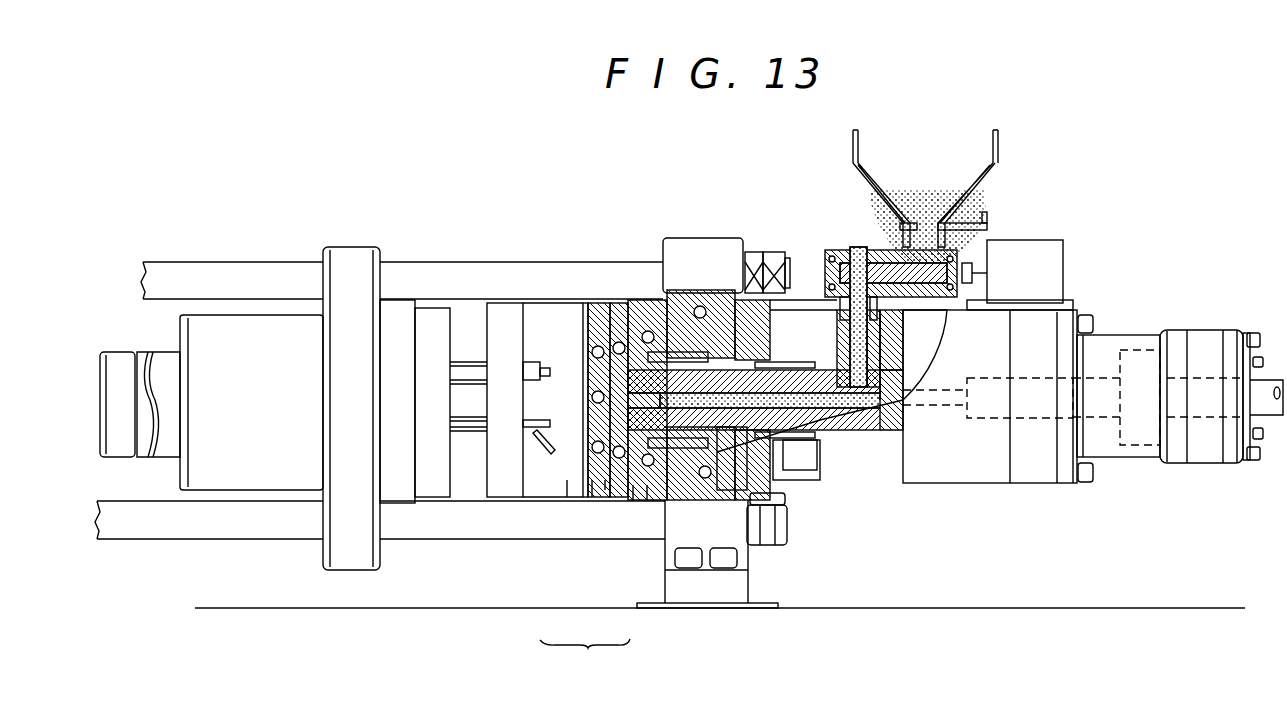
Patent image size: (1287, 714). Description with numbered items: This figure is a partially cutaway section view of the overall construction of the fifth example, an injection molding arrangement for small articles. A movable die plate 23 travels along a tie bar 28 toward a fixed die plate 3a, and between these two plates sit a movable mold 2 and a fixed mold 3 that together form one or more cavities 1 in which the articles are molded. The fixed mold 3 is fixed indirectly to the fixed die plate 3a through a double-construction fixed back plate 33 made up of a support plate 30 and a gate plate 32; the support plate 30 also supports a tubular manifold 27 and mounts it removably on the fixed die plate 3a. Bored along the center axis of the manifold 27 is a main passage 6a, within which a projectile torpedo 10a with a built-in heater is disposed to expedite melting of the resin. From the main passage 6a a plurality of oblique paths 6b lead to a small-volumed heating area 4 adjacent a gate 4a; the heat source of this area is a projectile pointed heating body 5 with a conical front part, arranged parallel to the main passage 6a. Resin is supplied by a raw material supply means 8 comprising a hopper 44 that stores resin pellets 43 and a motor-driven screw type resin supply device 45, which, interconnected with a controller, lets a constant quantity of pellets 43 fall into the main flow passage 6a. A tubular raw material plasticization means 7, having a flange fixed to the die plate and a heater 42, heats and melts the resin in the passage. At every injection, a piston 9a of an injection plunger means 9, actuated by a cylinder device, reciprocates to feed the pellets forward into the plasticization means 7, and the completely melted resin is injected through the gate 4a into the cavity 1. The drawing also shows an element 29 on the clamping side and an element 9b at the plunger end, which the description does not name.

The cavity 1 is at (592, 497).
The movable mold 2 is at (512, 396).
The fixed mold 3 is at (590, 330).
The fixed die plate 3a is at (702, 252).
The heating area 4 is at (592, 382).
The gate 4a is at (567, 497).
The pointed heating body 5 is at (605, 490).
The main passage 6a is at (818, 427).
The oblique paths 6b is at (663, 330).
The raw material plasticization means 7 is at (780, 480).
The raw material supply means 8 is at (945, 226).
The injection plunger means 9 is at (1028, 415).
The piston 9a is at (890, 400).
The motor rear unit 9b is at (1135, 425).
The torpedo 10a is at (680, 470).
The movable die plate 23 is at (357, 252).
The manifold 27 is at (730, 487).
The tie bar 28 is at (476, 276).
The clamping cylinder 29 is at (233, 460).
The support plate 30 is at (647, 500).
The gate plate 32 is at (633, 500).
The fixed back plate 33 is at (585, 655).
The heater 42 is at (790, 365).
The resin pellets 43 is at (920, 192).
The hopper 44 is at (858, 137).
The screw type resin supply device 45 is at (883, 248).